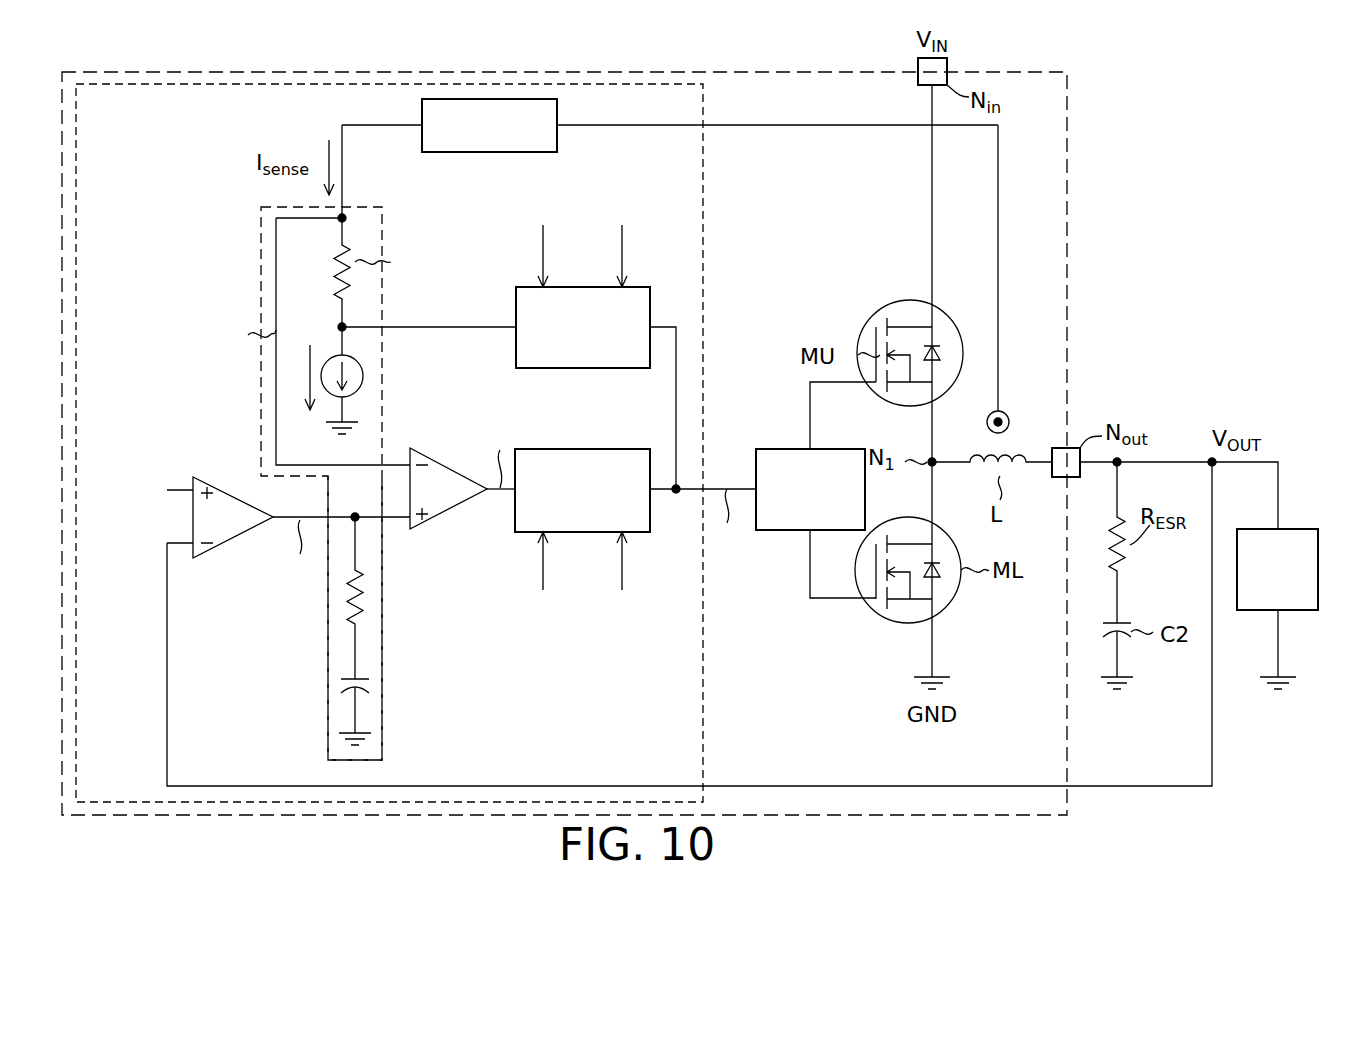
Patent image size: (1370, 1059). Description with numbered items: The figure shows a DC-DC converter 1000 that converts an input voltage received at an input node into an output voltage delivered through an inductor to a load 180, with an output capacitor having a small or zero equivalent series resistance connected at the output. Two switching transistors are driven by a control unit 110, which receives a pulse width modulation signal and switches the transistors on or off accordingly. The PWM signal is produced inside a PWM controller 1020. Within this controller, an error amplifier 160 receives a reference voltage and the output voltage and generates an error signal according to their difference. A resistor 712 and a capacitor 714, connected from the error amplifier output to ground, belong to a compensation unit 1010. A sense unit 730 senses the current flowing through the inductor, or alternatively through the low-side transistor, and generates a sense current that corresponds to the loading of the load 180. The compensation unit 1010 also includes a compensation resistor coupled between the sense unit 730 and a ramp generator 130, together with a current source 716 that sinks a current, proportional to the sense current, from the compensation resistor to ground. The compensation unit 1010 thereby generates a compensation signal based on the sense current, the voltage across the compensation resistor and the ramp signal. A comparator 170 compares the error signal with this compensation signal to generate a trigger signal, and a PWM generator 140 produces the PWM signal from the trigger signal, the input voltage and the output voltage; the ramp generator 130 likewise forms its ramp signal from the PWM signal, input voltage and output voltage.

The DC-DC converter 1000 is at (1067, 215).
The PWM controller 1020 is at (703, 722).
The sense unit 730 is at (460, 152).
The current source 716 is at (363, 376).
The ramp generator 130 is at (560, 368).
The PWM generator 140 is at (620, 449).
The error amplifier 160 is at (228, 480).
The comparator 170 is at (456, 510).
The resistor 712 is at (368, 597).
The capacitor 714 is at (368, 686).
The compensation unit 1010 is at (382, 630).
The control unit 110 is at (790, 449).
The load 180 is at (1298, 529).